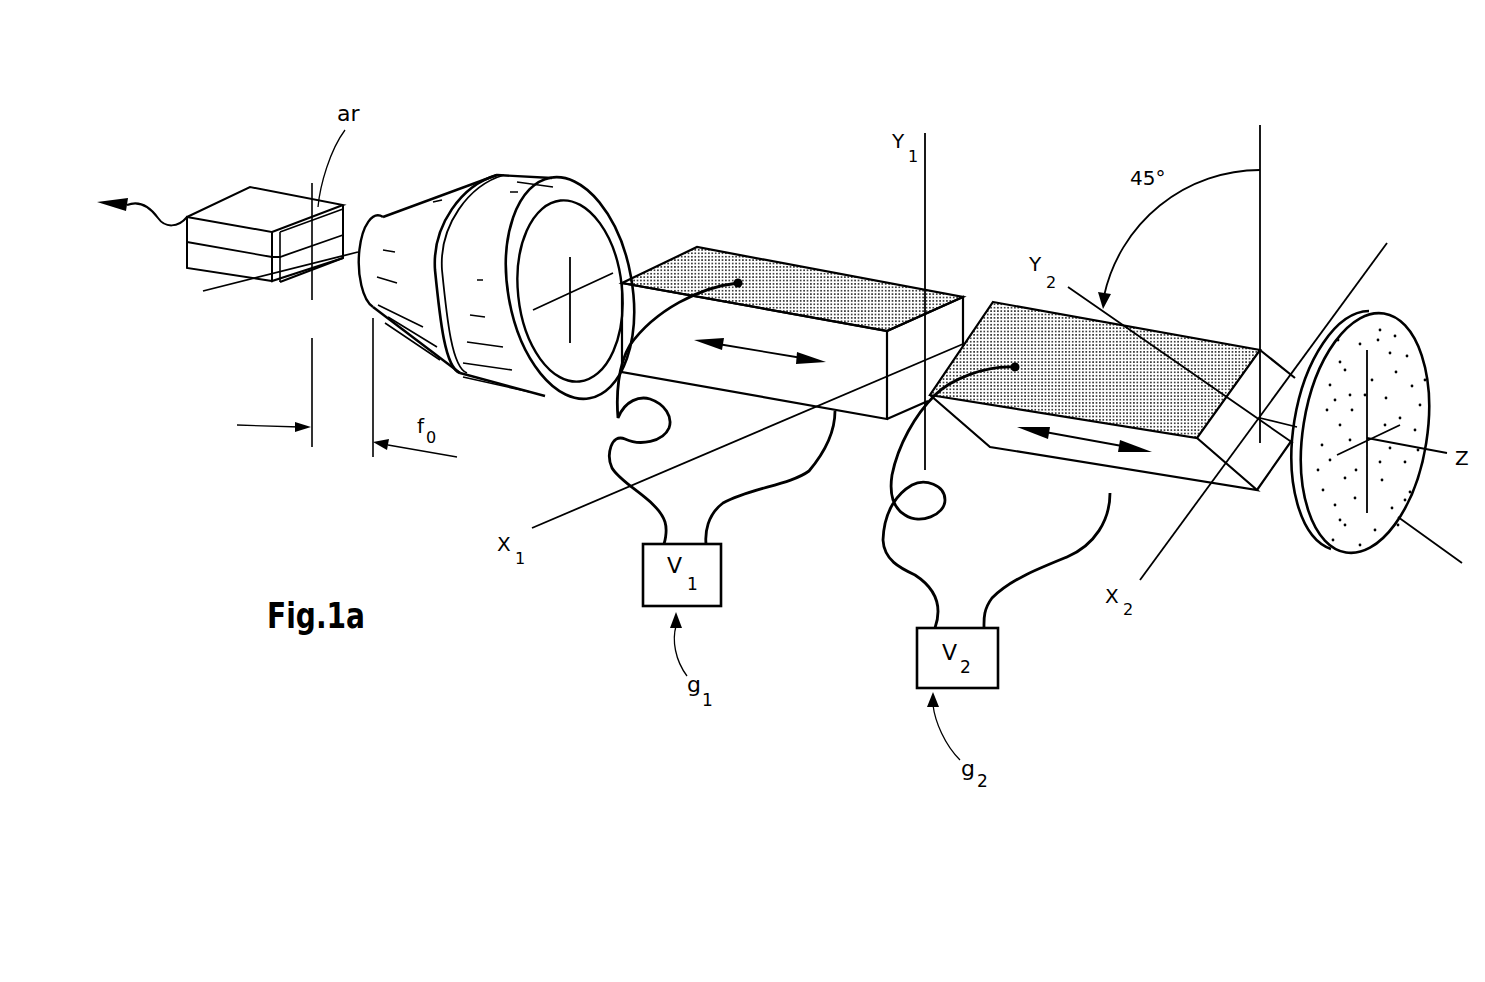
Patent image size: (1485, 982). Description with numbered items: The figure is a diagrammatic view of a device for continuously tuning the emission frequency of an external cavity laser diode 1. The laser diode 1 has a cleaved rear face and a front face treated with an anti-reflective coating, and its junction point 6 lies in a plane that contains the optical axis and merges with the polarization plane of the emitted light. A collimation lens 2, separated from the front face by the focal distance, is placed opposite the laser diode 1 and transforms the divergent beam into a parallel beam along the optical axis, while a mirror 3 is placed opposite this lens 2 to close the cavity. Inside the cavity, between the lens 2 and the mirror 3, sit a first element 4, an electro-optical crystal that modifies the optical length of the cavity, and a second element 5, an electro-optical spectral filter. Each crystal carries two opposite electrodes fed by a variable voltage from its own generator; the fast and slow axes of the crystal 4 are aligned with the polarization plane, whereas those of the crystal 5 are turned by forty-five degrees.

The external cavity laser diode 1 is at (263, 200).
The collimation lens 2 is at (420, 212).
The mirror 3 is at (1392, 373).
The first element 4 is at (715, 268).
The second element 5 is at (1249, 465).
The junction point 6 is at (294, 268).